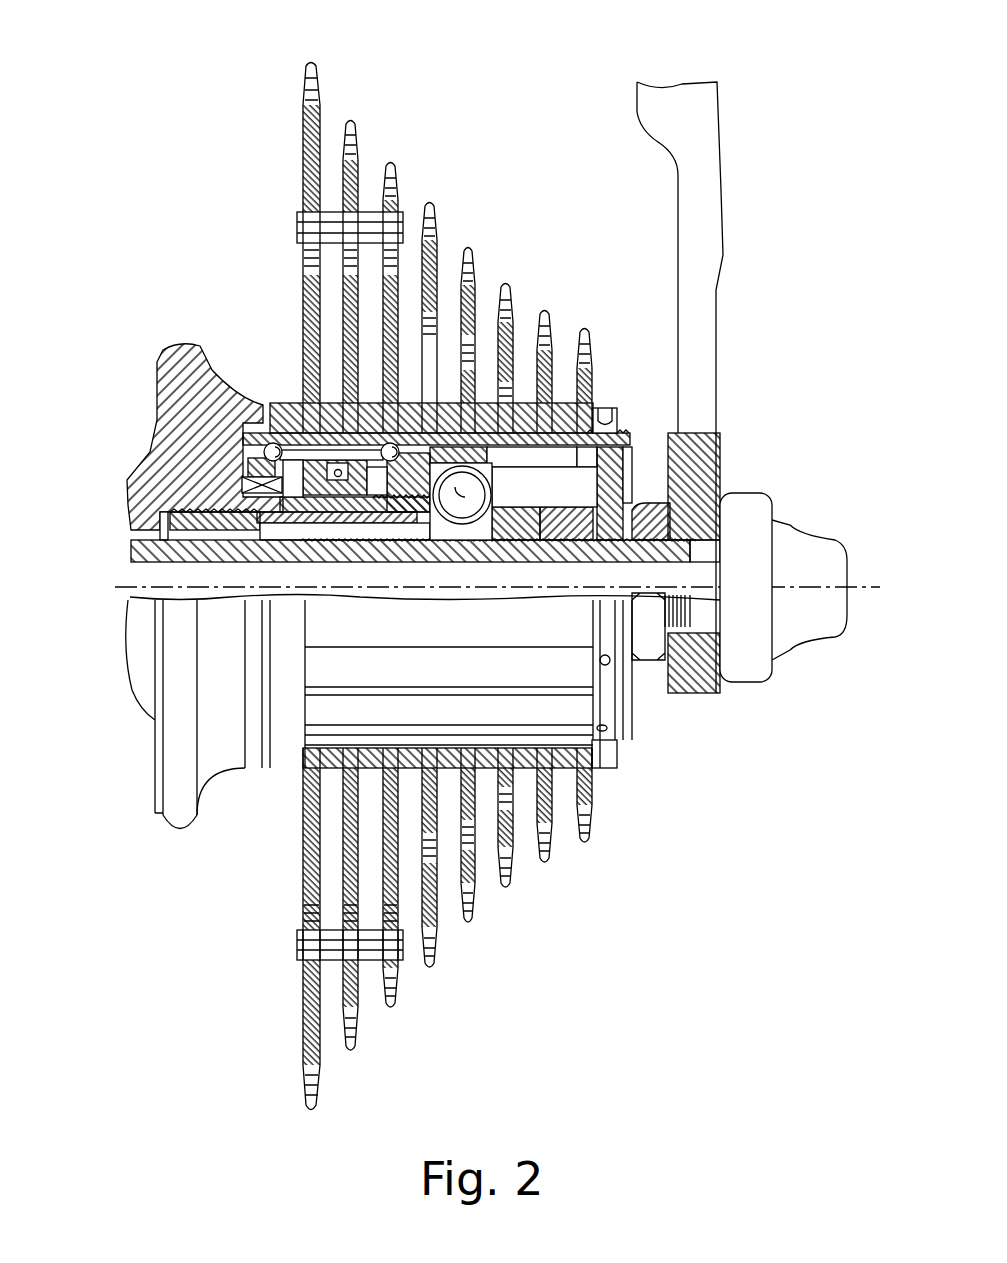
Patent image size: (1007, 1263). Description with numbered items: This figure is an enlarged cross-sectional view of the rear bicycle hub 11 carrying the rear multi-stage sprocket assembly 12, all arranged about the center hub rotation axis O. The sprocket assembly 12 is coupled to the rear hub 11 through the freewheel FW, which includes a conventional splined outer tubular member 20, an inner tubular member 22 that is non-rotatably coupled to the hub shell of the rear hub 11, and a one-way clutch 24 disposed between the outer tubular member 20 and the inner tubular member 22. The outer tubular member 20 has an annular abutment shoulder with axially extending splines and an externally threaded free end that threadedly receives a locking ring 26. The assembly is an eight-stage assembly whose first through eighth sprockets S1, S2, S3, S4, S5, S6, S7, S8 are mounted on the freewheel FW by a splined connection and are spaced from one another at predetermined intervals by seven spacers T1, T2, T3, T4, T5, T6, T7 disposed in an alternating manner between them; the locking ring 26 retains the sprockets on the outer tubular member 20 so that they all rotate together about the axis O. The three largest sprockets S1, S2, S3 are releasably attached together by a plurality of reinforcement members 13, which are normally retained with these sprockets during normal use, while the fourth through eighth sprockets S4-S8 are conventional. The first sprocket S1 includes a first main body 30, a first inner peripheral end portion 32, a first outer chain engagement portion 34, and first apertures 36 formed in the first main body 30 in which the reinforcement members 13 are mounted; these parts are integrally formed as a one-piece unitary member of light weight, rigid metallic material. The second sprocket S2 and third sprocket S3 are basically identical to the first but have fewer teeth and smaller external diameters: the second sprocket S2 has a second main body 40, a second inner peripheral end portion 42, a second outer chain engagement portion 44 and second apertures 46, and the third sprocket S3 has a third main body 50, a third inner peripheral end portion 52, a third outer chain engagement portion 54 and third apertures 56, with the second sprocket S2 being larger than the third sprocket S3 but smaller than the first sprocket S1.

The rear bicycle hub 11 is at (742, 395).
The rear multi-stage sprocket assembly 12 is at (520, 102).
The reinforcement members 13 is at (298, 222).
The outer tubular member 20 is at (645, 442).
The inner tubular member 22 is at (490, 453).
The one-way clutch 24 is at (313, 477).
The locking ring 26 is at (617, 420).
The first main body 30 is at (345, 785).
The first inner peripheral end portion 32 is at (305, 778).
The first outer chain engagement portion 34 is at (315, 1085).
The first apertures 36 is at (308, 917).
The second main body 40 is at (350, 883).
The second inner peripheral end portion 42 is at (310, 815).
The second outer chain engagement portion 44 is at (352, 1033).
The second apertures 46 is at (350, 915).
The third main body 50 is at (390, 830).
The third inner peripheral end portion 52 is at (397, 790).
The third outer chain engagement portion 54 is at (390, 985).
The third apertures 56 is at (390, 920).
The first sprocket S1 is at (318, 72).
The second sprocket S2 is at (355, 128).
The third sprocket S3 is at (395, 168).
The fourth sprocket S4 is at (435, 210).
The fifth sprocket S5 is at (474, 255).
The sixth sprocket S6 is at (512, 290).
The seventh sprocket S7 is at (551, 318).
The eighth sprocket S8 is at (590, 336).
The spacer T1 is at (331, 403).
The spacer T2 is at (370, 403).
The spacer T3 is at (410, 403).
The spacer T4 is at (449, 403).
The spacer T5 is at (487, 403).
The spacer T6 is at (525, 403).
The spacer T7 is at (565, 403).
The freewheel FW is at (232, 385).
The center hub rotation axis O is at (783, 587).